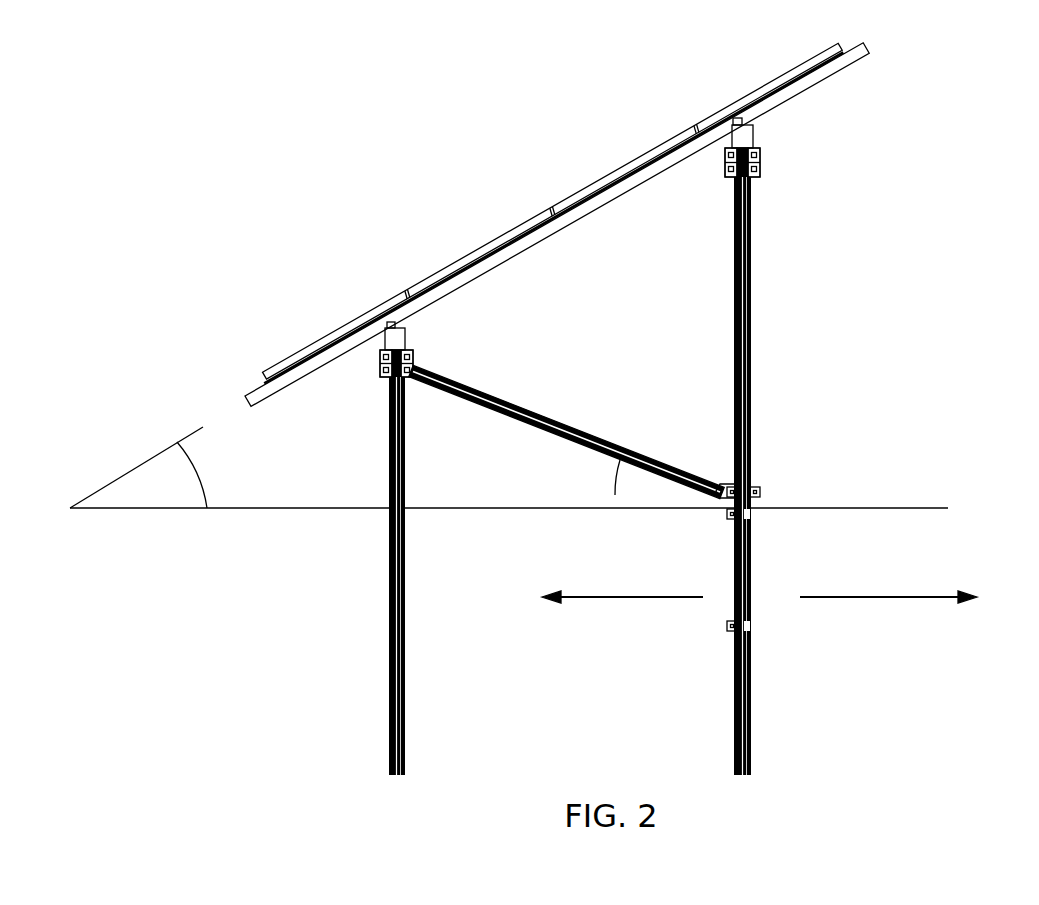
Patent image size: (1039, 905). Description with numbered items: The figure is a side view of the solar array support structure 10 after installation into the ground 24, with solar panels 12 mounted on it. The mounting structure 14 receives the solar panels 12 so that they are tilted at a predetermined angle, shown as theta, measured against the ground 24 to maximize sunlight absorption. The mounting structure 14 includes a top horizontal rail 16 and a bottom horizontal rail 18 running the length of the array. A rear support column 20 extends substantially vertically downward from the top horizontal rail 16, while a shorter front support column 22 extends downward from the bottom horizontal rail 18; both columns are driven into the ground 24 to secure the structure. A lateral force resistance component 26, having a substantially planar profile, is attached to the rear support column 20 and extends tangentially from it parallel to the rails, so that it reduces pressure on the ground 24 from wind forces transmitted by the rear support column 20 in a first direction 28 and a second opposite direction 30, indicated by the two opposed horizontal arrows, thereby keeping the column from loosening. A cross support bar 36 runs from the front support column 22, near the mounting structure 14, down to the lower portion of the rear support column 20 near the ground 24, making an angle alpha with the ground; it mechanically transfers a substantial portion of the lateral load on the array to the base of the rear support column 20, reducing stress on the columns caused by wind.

The solar array support structure 10 is at (872, 206).
The solar panels 12 is at (646, 148).
The mounting structure 14 is at (575, 242).
The top horizontal rail 16 is at (742, 136).
The bottom horizontal rail 18 is at (397, 343).
The rear support column 20 is at (750, 309).
The front support column 22 is at (390, 590).
The ground 24 is at (855, 562).
The lateral force resistance component 26 is at (752, 628).
The first direction 28 is at (905, 598).
The second opposite direction 30 is at (620, 598).
The cross support bar 36 is at (568, 424).